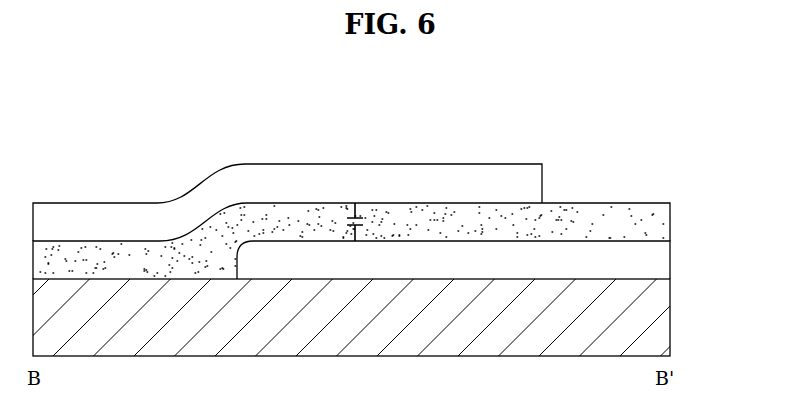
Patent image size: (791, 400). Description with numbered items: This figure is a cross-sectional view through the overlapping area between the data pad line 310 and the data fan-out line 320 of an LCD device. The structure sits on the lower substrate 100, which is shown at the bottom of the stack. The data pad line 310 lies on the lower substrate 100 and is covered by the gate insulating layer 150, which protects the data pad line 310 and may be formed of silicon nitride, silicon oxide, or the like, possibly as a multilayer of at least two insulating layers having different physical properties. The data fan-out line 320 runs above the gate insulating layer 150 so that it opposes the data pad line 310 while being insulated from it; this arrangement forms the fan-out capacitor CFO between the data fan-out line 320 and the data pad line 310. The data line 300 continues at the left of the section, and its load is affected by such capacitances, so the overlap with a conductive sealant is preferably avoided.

The lower substrate 100 is at (652, 318).
The gate insulating layer 150 is at (652, 224).
The data line 300 is at (93, 222).
The data pad line 310 is at (652, 262).
The data fan-out line 320 is at (433, 183).
The fan-out capacitor CFO is at (343, 205).